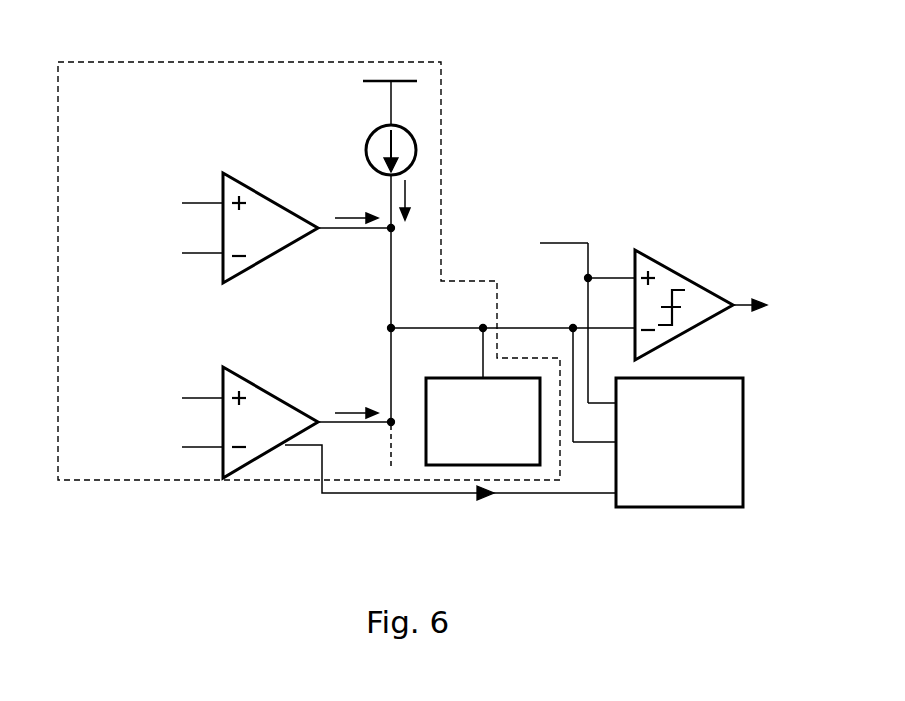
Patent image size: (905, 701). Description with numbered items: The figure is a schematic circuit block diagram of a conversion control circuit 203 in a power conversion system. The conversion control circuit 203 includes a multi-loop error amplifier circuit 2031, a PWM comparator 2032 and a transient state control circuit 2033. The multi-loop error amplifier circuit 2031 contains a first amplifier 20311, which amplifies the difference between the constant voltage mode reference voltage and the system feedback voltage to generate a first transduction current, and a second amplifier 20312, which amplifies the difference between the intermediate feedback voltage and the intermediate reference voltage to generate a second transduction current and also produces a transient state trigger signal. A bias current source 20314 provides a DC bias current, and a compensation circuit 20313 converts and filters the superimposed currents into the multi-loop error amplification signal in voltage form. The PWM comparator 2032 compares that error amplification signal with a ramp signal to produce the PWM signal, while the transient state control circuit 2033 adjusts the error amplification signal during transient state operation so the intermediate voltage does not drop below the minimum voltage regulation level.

The conversion control circuit 203 is at (215, 50).
The multi-loop error amplifier circuit 2031 is at (128, 102).
The first amplifier 20311 is at (262, 192).
The second amplifier 20312 is at (262, 386).
The compensation circuit 20313 is at (464, 447).
The bias current source 20314 is at (365, 155).
The PWM comparator 2032 is at (670, 266).
The transient state control circuit 2033 is at (663, 489).